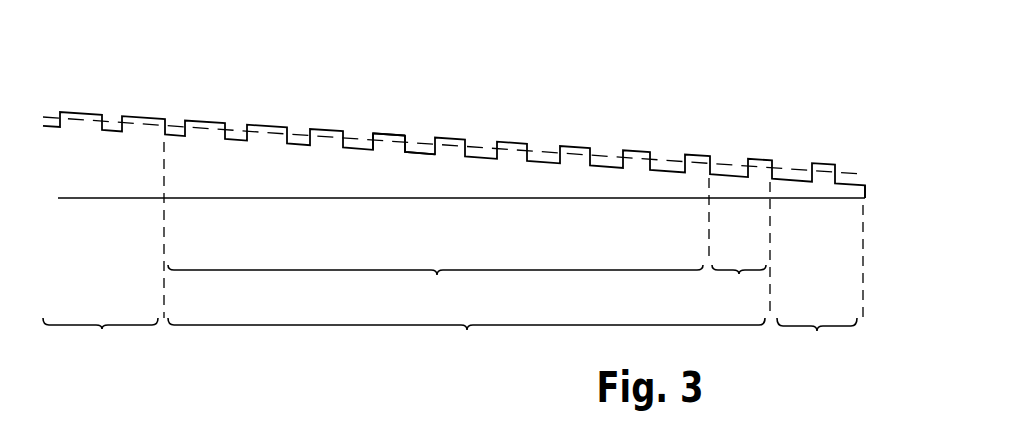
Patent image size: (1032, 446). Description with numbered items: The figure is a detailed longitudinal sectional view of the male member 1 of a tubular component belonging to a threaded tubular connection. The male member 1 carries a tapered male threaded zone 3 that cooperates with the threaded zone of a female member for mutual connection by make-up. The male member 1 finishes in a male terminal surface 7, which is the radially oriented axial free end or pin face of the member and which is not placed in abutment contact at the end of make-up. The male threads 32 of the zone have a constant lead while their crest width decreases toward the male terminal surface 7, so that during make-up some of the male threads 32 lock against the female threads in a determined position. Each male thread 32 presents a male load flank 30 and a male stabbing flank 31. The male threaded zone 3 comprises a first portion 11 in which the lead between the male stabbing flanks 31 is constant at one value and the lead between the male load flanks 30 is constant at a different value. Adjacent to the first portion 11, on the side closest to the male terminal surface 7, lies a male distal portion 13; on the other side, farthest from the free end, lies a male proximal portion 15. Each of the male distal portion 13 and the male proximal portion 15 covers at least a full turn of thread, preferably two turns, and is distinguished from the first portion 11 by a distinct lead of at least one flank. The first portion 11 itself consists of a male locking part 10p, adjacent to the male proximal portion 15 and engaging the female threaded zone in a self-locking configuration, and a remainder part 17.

The male member 1 is at (112, 182).
The male threaded zone 3 is at (470, 119).
The male load flank 30 is at (372, 134).
The male thread 32 is at (394, 136).
The male stabbing flank 31 is at (414, 140).
The male terminal surface 7 is at (866, 190).
The male locking part 10p is at (436, 230).
The remainder part 17 is at (741, 250).
The first portion 11 is at (466, 339).
The male proximal portion 15 is at (100, 338).
The male distal portion 13 is at (820, 284).